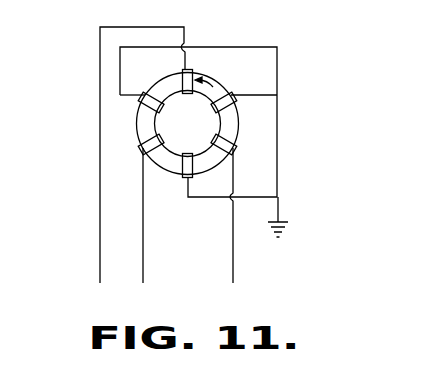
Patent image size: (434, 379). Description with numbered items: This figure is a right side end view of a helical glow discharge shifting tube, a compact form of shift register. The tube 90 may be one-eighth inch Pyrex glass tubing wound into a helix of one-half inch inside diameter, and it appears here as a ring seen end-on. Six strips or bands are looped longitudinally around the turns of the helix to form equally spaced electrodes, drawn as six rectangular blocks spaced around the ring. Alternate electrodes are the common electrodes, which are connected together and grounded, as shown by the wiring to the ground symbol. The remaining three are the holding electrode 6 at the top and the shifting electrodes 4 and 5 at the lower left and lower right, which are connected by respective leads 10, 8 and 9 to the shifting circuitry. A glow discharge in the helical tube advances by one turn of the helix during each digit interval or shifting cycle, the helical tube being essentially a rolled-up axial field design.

The tube 90 is at (236, 116).
The holding electrode 6 is at (188, 94).
The shifting electrode 4 is at (144, 144).
The shifting electrode 5 is at (232, 143).
The lead 10 is at (100, 262).
The lead 8 is at (143, 266).
The lead 9 is at (233, 266).